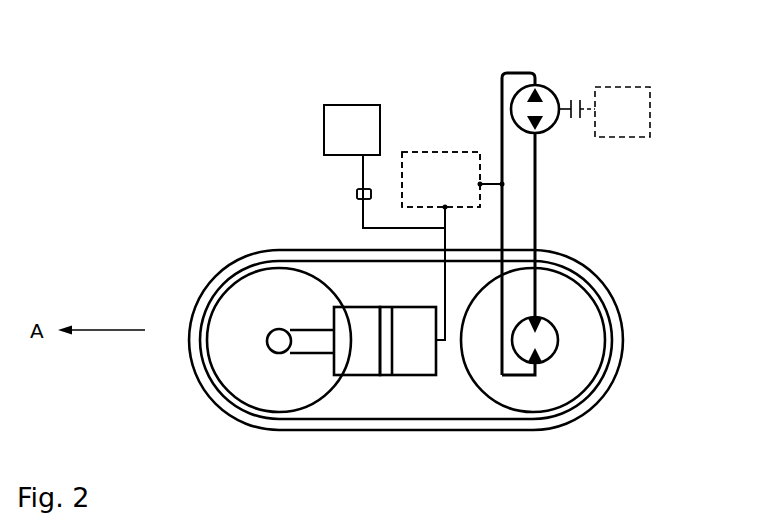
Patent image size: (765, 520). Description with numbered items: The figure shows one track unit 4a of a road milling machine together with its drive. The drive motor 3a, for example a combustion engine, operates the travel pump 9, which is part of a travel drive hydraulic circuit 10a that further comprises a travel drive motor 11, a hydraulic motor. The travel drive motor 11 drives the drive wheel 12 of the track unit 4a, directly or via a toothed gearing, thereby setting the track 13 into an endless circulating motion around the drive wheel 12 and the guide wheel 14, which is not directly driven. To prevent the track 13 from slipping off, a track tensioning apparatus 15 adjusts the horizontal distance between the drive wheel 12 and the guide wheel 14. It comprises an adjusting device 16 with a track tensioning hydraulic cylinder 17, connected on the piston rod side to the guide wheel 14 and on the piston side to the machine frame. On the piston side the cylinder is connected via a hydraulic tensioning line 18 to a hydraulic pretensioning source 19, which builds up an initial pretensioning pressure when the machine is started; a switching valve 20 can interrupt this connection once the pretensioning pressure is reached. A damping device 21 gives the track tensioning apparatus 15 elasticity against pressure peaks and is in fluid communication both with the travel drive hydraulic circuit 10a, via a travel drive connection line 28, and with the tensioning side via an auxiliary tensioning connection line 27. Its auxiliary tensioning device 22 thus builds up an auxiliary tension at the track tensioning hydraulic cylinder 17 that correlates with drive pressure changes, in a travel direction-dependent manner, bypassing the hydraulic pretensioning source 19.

The drive motor 3a is at (637, 108).
The track unit 4a is at (227, 232).
The travel pump 9 is at (547, 105).
The travel drive hydraulic circuit 10a is at (537, 207).
The travel drive motor 11 is at (547, 350).
The drive wheel 12 is at (607, 350).
The track 13 is at (498, 425).
The guide wheel 14 is at (260, 405).
The track tensioning apparatus 15 is at (374, 264).
The adjusting device 16 is at (357, 377).
The track tensioning hydraulic cylinder 17 is at (412, 377).
The hydraulic tensioning line 18 is at (360, 182).
The hydraulic pretensioning source 19 is at (343, 112).
The switching valve 20 is at (372, 190).
The damping device 21 is at (432, 167).
The auxiliary tensioning device 22 is at (441, 179).
The auxiliary tensioning connection line 27 is at (448, 223).
The travel drive connection line 28 is at (492, 183).